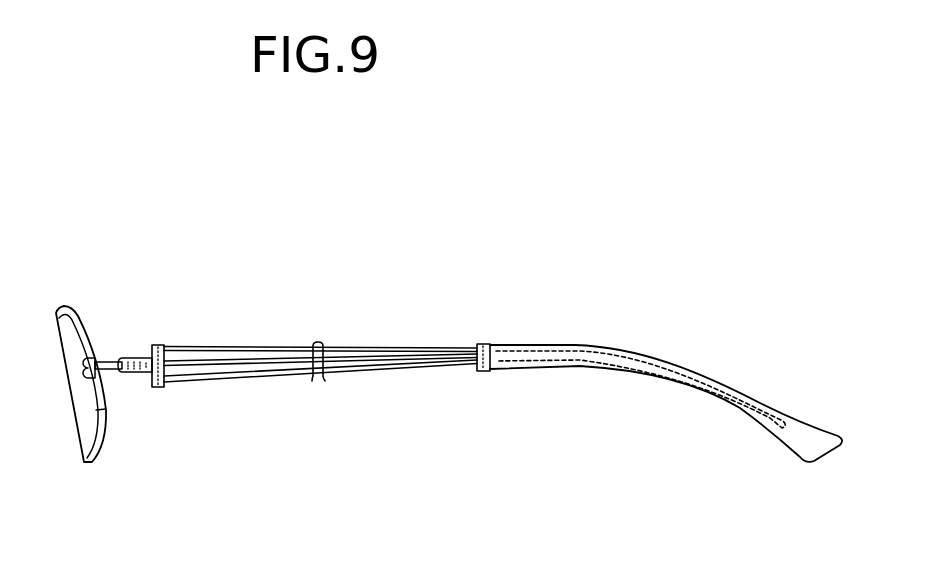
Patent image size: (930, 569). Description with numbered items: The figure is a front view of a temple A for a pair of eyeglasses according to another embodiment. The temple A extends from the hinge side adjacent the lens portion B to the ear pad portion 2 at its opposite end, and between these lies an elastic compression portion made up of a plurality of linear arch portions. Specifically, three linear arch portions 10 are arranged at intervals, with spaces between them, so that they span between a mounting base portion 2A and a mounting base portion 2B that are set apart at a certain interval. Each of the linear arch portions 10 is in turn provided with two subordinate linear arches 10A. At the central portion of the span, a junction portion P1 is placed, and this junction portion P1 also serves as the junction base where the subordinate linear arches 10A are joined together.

The temple A is at (500, 204).
The lens portion B is at (85, 421).
The ear pad portion 2 is at (722, 383).
The mounting base portion 2A is at (157, 345).
The mounting base portion 2B is at (485, 345).
The linear arch portions 10 is at (320, 300).
The subordinate linear arches 10A is at (398, 273).
The junction portion P1 is at (318, 381).